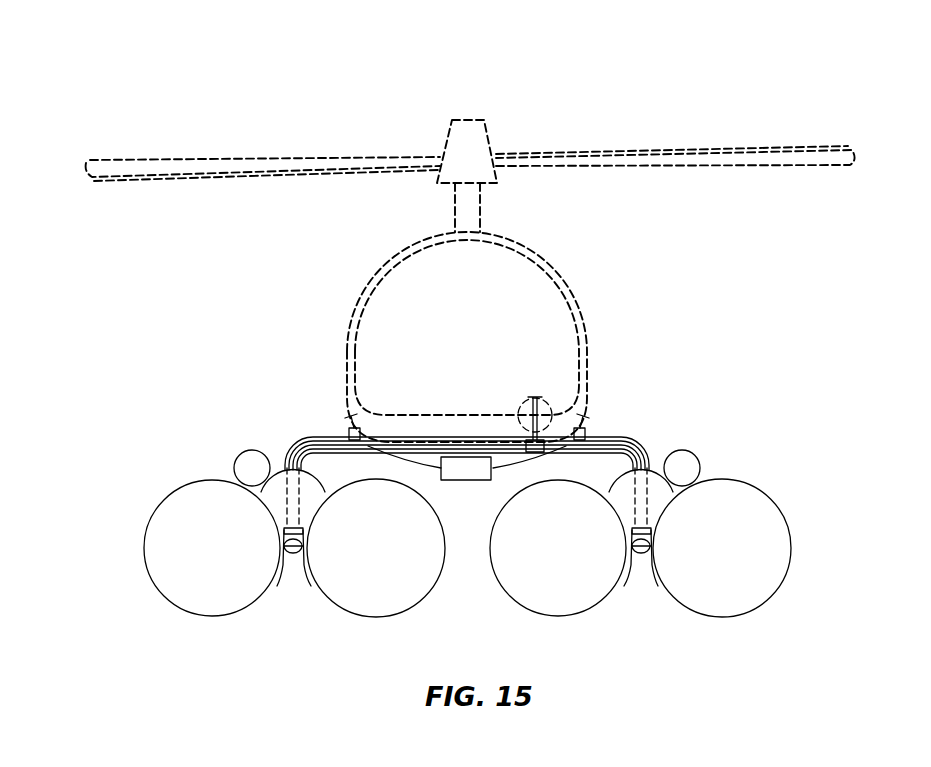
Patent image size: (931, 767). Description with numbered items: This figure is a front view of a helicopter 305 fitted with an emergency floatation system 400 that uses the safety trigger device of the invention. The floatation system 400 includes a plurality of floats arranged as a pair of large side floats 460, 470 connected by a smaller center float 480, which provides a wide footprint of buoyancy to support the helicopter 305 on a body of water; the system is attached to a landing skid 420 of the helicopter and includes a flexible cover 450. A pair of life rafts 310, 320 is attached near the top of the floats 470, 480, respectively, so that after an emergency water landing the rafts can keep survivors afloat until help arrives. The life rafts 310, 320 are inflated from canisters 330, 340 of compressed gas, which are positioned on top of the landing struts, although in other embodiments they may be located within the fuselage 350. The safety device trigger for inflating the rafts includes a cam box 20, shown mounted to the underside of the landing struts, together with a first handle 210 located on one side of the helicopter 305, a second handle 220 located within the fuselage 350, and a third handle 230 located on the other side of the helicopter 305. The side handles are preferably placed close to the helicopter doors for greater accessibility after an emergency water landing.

The emergency floatation system 400 is at (128, 66).
The helicopter 305 is at (352, 272).
The fuselage 350 is at (484, 311).
The second handle 220 is at (530, 395).
The third handle 230 is at (344, 405).
The first handle 210 is at (591, 405).
The canister 340 is at (345, 430).
The canister 330 is at (593, 430).
The center float 480 is at (278, 462).
The life raft 320 is at (240, 460).
The emergency life raft 310 is at (702, 460).
The cam box 20 is at (452, 482).
The side float 460 is at (232, 560).
The side float 470 is at (396, 560).
The landing skid 420 is at (290, 568).
The flexible cover 450 is at (304, 570).